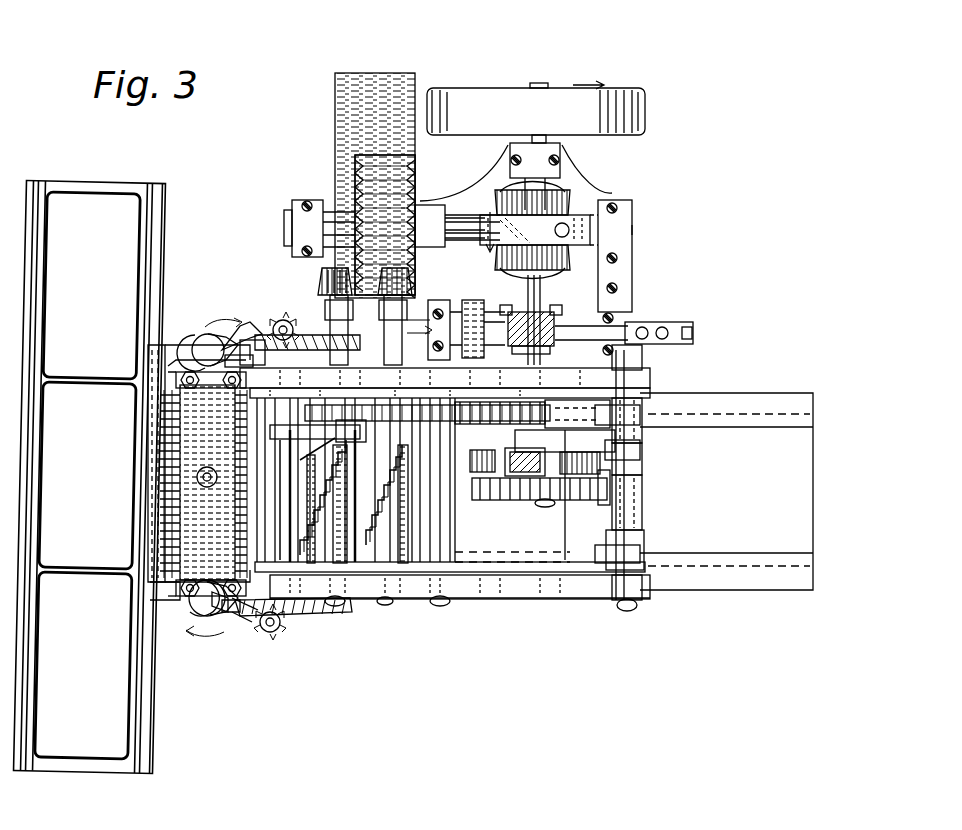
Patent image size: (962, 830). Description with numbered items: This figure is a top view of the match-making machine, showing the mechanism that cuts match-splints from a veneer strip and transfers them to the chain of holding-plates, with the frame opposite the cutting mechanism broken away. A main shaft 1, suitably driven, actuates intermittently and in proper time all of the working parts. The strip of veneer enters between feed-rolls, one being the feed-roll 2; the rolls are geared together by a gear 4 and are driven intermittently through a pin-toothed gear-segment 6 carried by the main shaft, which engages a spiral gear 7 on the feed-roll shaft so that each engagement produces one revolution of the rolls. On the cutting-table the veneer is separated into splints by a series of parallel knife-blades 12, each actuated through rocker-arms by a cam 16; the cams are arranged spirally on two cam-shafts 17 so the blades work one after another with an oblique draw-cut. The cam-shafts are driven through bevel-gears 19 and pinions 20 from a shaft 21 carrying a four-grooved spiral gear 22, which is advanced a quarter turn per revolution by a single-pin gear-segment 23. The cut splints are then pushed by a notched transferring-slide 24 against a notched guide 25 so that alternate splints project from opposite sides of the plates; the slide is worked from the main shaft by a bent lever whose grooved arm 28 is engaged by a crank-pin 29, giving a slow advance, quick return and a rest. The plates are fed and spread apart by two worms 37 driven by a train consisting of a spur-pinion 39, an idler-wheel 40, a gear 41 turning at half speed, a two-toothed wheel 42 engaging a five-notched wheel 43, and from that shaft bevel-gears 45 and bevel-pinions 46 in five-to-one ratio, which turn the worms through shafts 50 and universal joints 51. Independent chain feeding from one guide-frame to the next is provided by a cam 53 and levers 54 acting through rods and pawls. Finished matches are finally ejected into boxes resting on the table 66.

The main shaft 1 is at (526, 292).
The feed-roll 2 is at (414, 308).
The gear 4 is at (468, 304).
The gear-segment 6 is at (668, 330).
The spiral gear 7 is at (548, 322).
The knife-blades 12 is at (295, 482).
The cam 16 is at (297, 518).
The cam-shafts 17 is at (384, 600).
The bevel-gears 19 is at (410, 176).
The pinions 20 is at (332, 287).
The shaft 21 is at (458, 236).
The spiral gear 22 is at (505, 270).
The gear-segment 23 is at (570, 250).
The transferring-slide 24 is at (565, 528).
The notched guide 25 is at (164, 602).
The lever arm 28 is at (476, 496).
The crank-pin 29 is at (555, 503).
The worms 37 is at (198, 345).
The spur-pinion 39 is at (518, 427).
The idler-wheel 40 is at (478, 424).
The gear 41 is at (305, 410).
The two-toothed wheel 42 is at (300, 455).
The notched wheel 43 is at (290, 437).
The bevel-gears 45 is at (335, 613).
The bevel-pinions 46 is at (264, 633).
The shafts 50 is at (228, 616).
The universal joints 51 is at (218, 626).
The cam 53 is at (478, 458).
The levers 54 is at (456, 565).
The table 66 is at (150, 738).